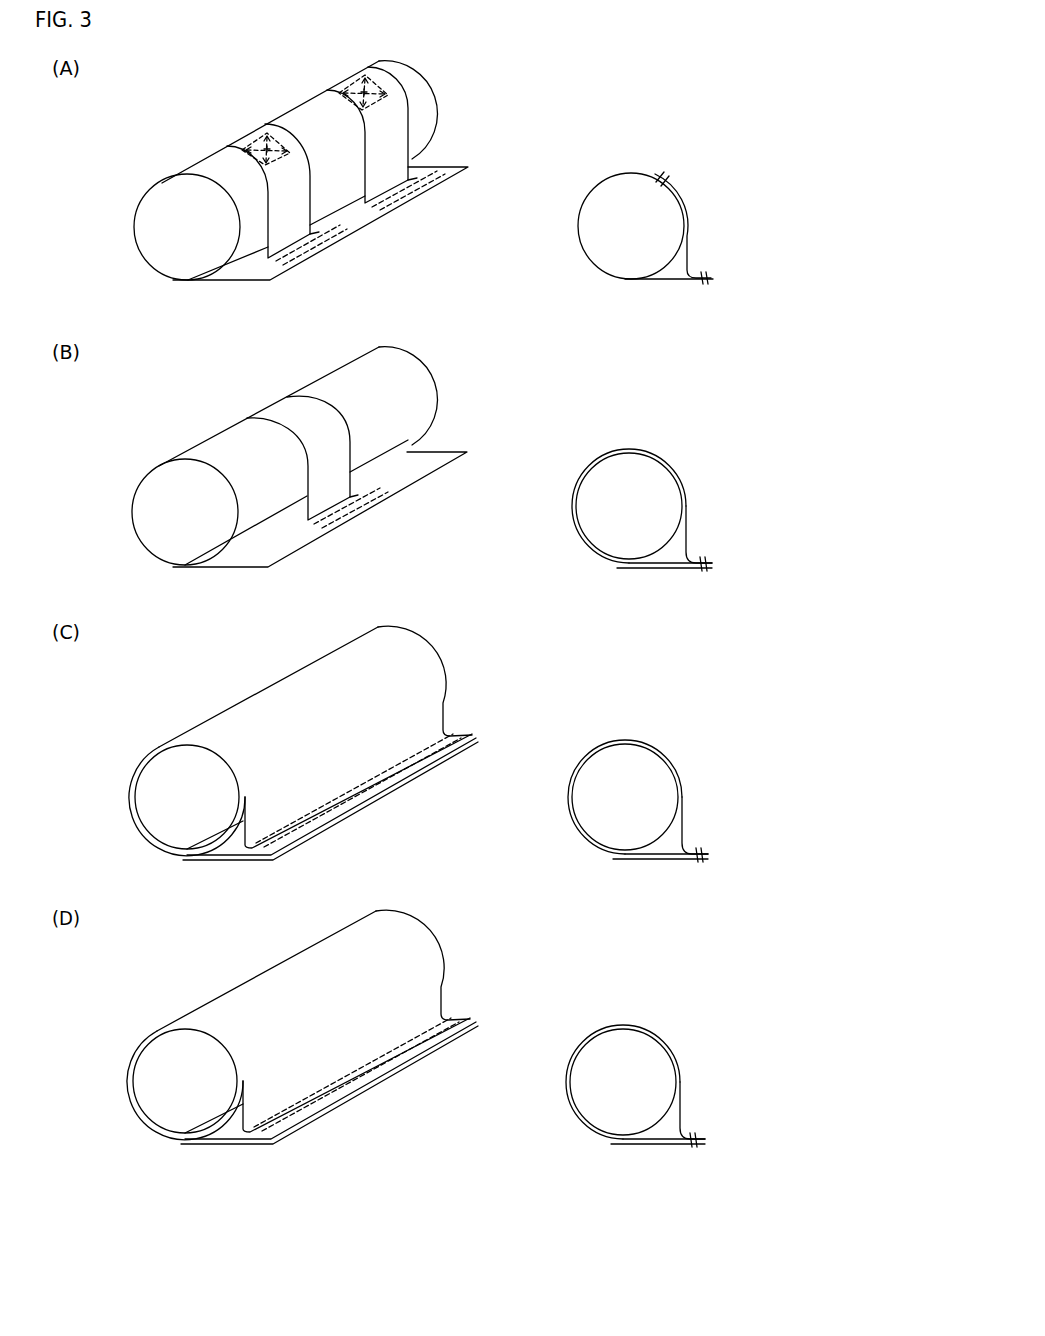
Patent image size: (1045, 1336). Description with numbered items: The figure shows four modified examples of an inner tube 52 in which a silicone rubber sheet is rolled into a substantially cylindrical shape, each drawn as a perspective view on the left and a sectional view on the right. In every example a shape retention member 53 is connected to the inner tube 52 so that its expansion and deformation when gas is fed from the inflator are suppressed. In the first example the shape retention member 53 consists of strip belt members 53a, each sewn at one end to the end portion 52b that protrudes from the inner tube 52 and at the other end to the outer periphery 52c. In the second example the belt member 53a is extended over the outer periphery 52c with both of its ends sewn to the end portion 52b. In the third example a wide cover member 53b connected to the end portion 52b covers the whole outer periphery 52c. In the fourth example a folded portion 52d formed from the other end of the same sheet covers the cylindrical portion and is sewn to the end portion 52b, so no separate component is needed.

The inner tube 52 is at (222, 108).
The end portion 52b is at (368, 222).
The outer periphery 52c is at (299, 118).
The folded portion 52d is at (357, 1082).
The shape retention member 53 is at (275, 973).
The belt member 53a is at (400, 103).
The cover member 53b is at (283, 695).